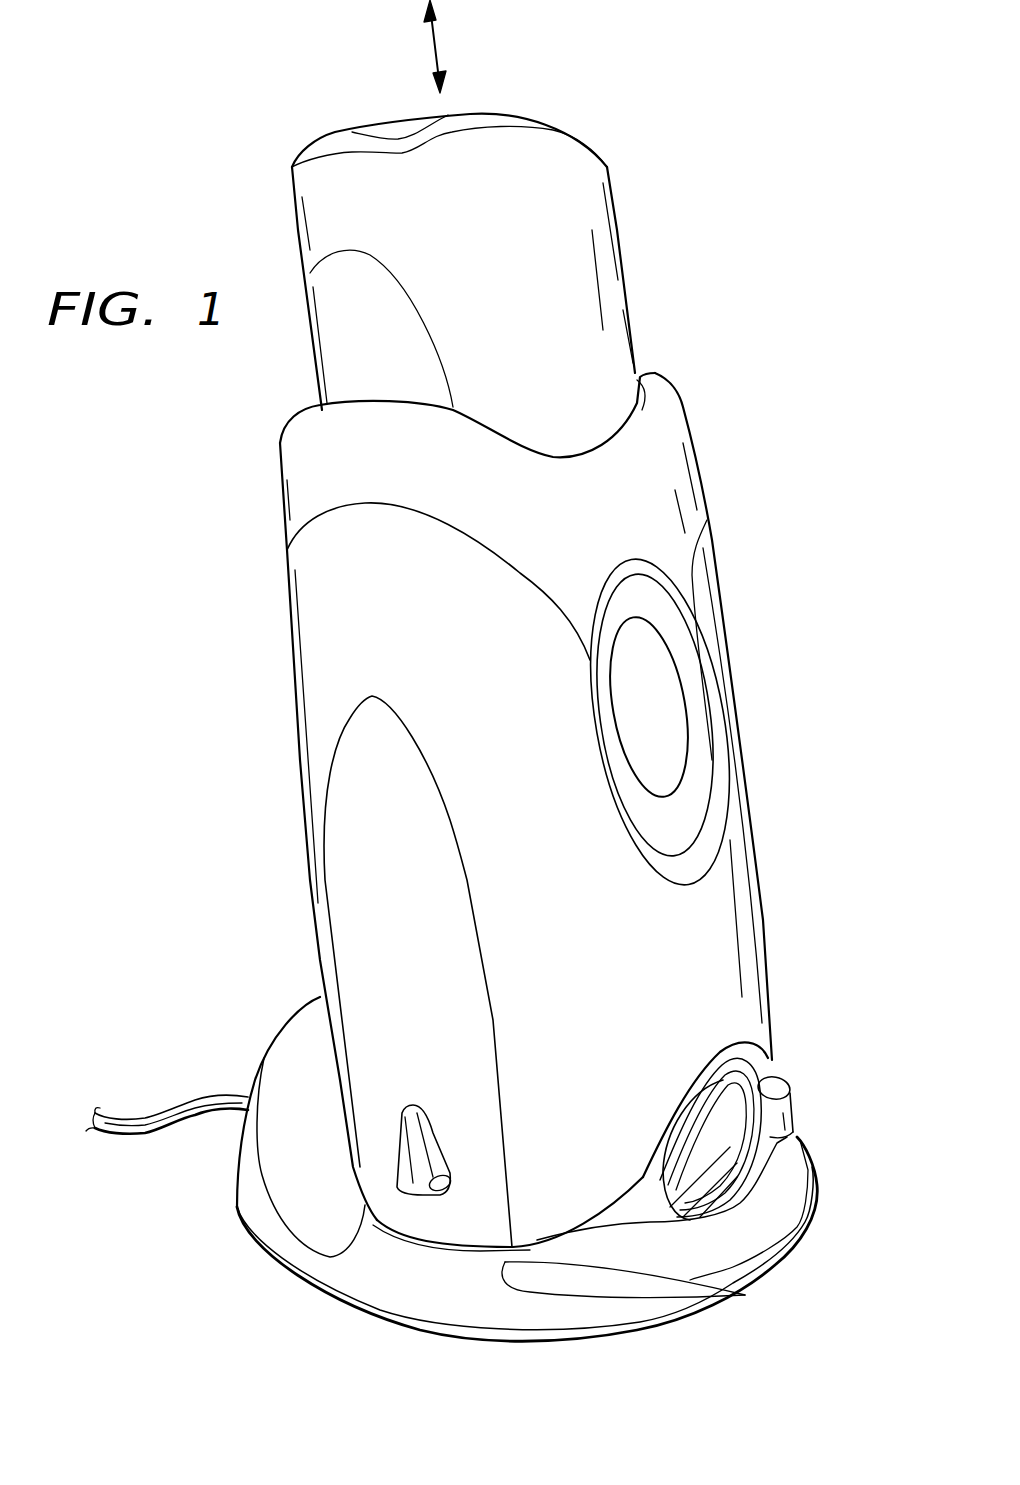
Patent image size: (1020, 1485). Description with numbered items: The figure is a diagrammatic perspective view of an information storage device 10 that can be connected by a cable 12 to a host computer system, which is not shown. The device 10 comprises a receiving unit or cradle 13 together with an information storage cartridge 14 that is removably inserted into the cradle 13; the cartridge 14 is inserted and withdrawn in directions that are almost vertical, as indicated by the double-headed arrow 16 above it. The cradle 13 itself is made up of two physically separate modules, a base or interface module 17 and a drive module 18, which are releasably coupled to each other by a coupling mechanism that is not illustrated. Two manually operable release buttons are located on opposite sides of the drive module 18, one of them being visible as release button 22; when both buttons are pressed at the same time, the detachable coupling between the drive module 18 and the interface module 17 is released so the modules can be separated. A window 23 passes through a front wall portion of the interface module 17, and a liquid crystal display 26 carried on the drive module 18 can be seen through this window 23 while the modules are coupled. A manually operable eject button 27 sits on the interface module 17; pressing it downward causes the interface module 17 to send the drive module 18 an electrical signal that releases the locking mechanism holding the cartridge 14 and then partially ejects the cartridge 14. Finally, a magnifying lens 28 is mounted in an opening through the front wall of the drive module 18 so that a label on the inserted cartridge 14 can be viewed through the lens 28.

The information storage device 10 is at (686, 317).
The cable 12 is at (173, 1107).
The cradle 13 is at (305, 942).
The information storage cartridge 14 is at (553, 167).
The double-headed arrow 16 is at (433, 50).
The interface module 17 is at (410, 1287).
The drive module 18 is at (717, 930).
The release button 22 is at (408, 1135).
The window 23 is at (723, 1193).
The liquid crystal display 26 is at (700, 1140).
The eject button 27 is at (778, 1087).
The magnifying lens 28 is at (657, 677).